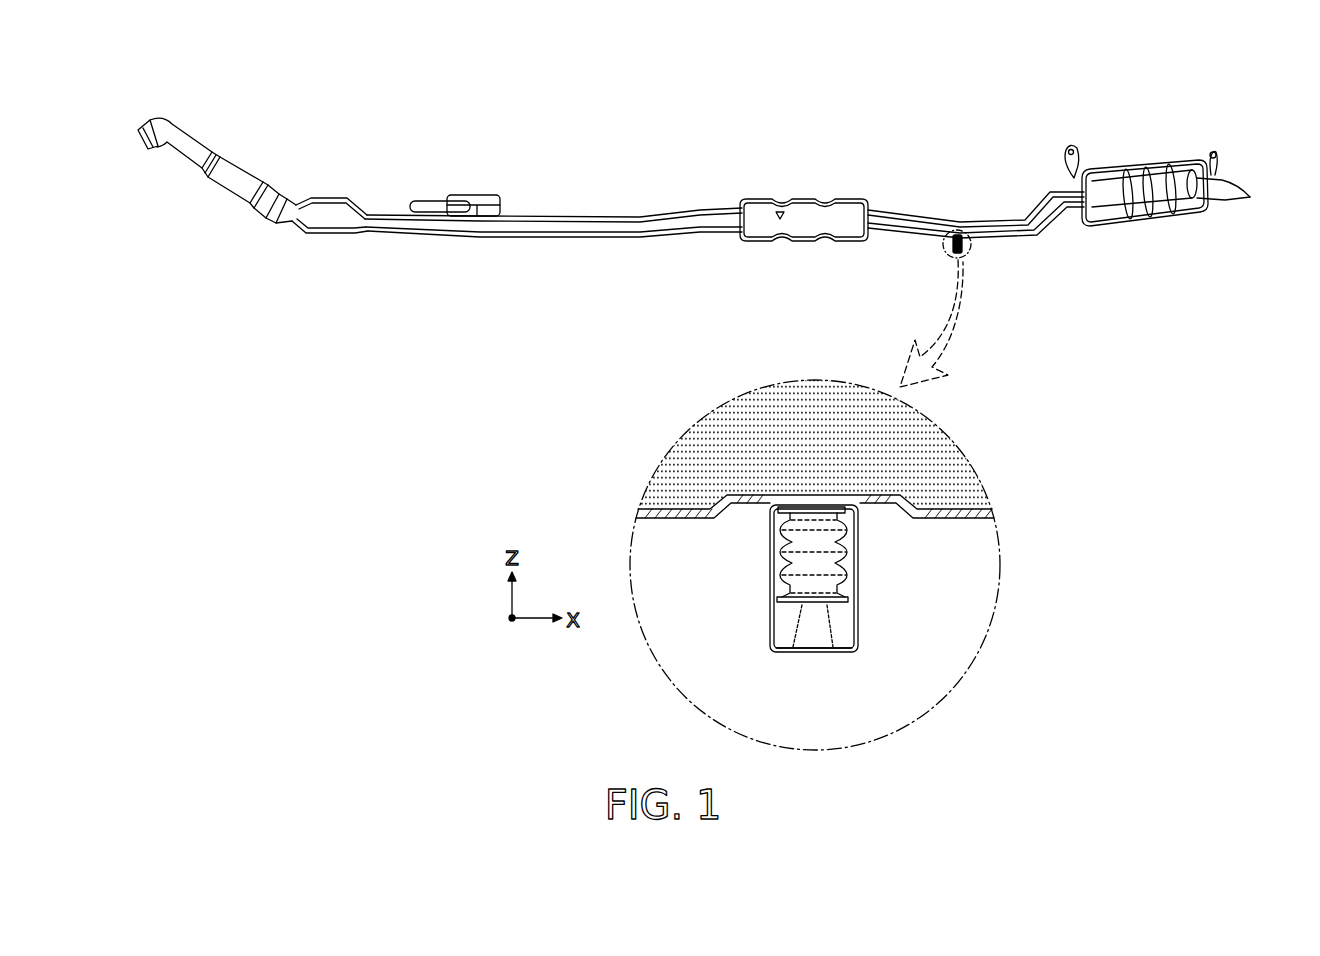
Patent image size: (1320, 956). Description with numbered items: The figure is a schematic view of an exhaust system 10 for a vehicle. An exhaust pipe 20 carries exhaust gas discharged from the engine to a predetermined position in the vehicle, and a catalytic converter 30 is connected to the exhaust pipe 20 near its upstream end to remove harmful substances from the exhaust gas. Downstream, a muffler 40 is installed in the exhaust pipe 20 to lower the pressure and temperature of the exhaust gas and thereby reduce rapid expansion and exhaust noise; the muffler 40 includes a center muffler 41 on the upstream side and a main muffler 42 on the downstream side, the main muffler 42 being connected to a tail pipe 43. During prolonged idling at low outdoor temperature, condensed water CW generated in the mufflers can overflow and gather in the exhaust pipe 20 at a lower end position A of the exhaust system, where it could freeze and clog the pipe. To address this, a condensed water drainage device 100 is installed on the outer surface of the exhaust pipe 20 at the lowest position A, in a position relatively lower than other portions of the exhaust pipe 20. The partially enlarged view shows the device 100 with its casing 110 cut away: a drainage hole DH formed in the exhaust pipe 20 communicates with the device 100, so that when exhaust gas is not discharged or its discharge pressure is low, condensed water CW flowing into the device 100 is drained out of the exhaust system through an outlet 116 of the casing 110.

The exhaust system 10 is at (268, 94).
The exhaust pipe 20 is at (568, 240).
The catalytic converter 30 is at (322, 197).
The muffler 40 is at (880, 91).
The center muffler 41 is at (848, 198).
The main muffler 42 is at (1108, 170).
The tail pipe 43 is at (1240, 182).
The condensed water drainage device 100 is at (753, 637).
The casing 110 is at (768, 598).
The outlet 116 is at (787, 652).
The condensed water CW is at (988, 224).
The drainage hole DH is at (800, 503).
The lowest position of the exhaust system A is at (938, 272).